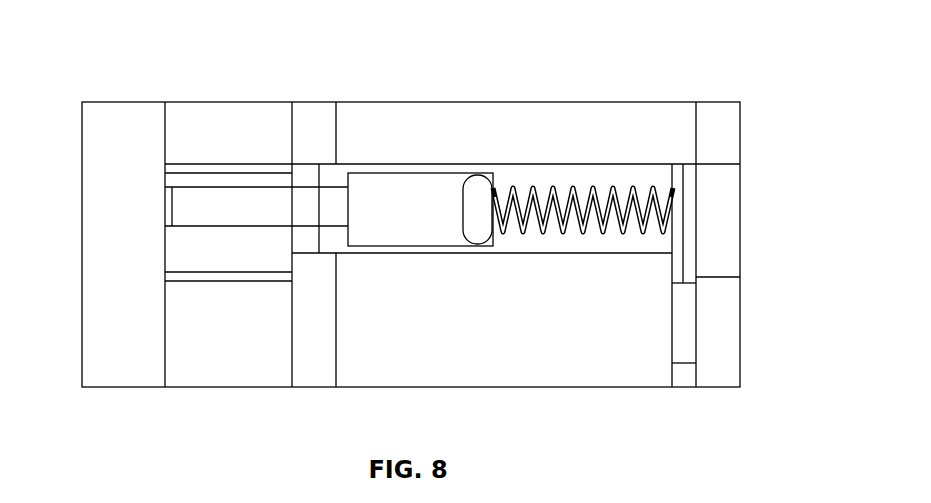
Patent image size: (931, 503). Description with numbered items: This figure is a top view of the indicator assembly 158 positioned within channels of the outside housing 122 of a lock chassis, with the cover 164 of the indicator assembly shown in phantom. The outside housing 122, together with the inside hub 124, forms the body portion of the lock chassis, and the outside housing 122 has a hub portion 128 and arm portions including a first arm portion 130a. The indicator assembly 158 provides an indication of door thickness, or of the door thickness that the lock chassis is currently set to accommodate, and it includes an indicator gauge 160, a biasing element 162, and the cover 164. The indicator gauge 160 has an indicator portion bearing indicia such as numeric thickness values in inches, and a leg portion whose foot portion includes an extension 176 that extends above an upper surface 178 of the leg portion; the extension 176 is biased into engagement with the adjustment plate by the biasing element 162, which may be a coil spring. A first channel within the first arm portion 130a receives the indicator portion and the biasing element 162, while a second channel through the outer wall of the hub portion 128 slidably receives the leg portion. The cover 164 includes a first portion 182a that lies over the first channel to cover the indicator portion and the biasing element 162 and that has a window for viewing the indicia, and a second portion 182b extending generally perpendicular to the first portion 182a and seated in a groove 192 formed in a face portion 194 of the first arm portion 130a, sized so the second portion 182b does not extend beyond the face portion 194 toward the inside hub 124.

The outside housing 122 is at (723, 110).
The inside hub 124 is at (123, 114).
The hub portion 128 is at (241, 114).
The first arm portion 130a is at (581, 108).
The indicator assembly 158 is at (444, 136).
The indicator gauge 160 is at (407, 177).
The biasing element 162 is at (593, 180).
The cover 164 is at (635, 170).
The extension 176 is at (170, 202).
The upper surface 178 is at (200, 212).
The first portion 182a is at (520, 172).
The second portion 182b is at (680, 272).
The groove 192 is at (681, 373).
The face portion 194 is at (697, 141).